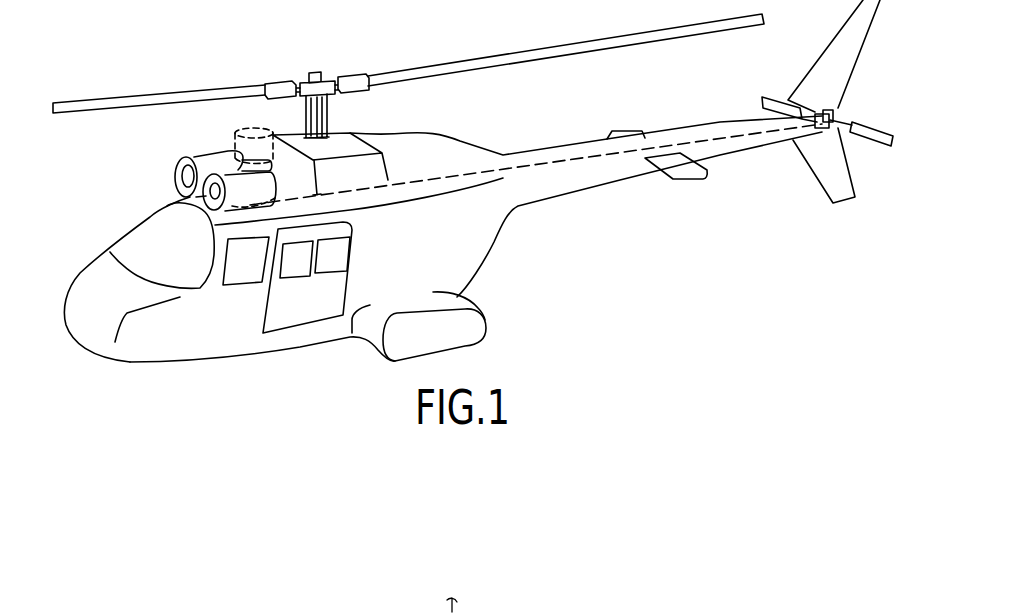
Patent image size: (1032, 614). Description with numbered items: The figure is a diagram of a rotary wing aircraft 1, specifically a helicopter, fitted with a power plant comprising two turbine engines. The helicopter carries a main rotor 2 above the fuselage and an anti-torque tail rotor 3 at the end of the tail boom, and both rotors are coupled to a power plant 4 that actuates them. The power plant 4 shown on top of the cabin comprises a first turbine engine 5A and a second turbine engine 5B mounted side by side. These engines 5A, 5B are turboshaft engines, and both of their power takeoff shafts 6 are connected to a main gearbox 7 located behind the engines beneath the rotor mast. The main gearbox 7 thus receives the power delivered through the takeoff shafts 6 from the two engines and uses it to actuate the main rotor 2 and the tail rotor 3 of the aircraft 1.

The rotary wing aircraft 1 is at (626, 294).
The main rotor 2 is at (546, 48).
The anti-torque tail rotor 3 is at (772, 97).
The power plant 4 is at (212, 226).
The first turbine engine 5A is at (233, 178).
The second turbine engine 5B is at (195, 156).
The power takeoff shafts 6 is at (249, 155).
The main gearbox 7 is at (350, 133).